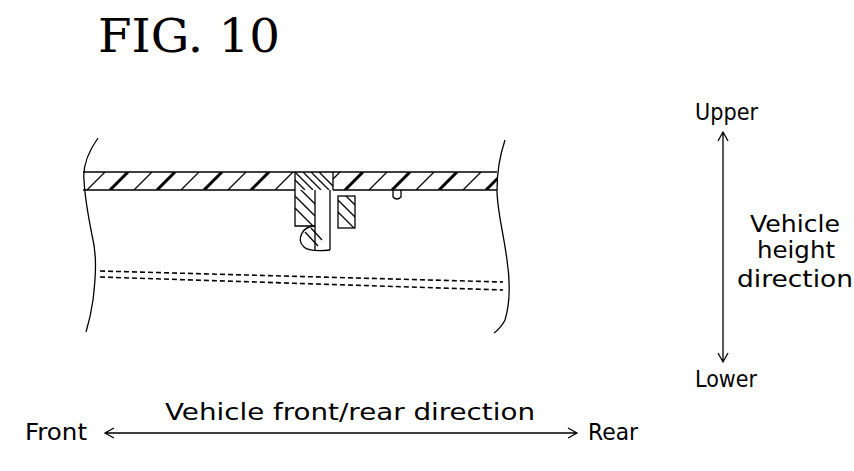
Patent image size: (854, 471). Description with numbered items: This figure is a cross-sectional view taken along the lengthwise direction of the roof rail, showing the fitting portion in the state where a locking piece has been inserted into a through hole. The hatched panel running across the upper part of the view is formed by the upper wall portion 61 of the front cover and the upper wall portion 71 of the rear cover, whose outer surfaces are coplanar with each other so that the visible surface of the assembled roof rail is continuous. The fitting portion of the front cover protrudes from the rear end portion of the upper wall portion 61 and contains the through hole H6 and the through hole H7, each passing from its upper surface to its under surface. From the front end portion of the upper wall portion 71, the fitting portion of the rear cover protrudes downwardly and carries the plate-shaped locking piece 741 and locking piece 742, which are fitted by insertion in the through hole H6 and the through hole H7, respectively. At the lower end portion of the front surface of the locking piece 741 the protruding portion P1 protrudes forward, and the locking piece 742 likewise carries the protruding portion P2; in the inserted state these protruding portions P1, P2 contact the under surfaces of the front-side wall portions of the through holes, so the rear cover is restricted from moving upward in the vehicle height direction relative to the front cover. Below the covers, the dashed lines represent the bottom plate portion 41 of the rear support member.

The upper wall portion 61 is at (193, 172).
The upper wall portion 71 is at (437, 172).
The locking piece 741 is at (327, 192).
The locking piece 742 is at (312, 211).
The protruding portion P1 is at (300, 236).
The protruding portion P2 is at (315, 238).
The through hole H6 is at (331, 230).
The through hole H7 is at (346, 208).
The bottom plate portion 41 is at (134, 271).